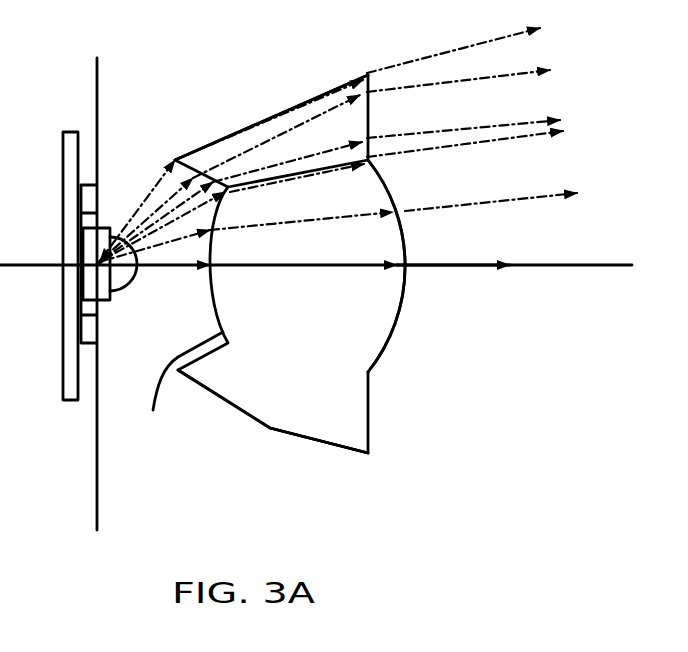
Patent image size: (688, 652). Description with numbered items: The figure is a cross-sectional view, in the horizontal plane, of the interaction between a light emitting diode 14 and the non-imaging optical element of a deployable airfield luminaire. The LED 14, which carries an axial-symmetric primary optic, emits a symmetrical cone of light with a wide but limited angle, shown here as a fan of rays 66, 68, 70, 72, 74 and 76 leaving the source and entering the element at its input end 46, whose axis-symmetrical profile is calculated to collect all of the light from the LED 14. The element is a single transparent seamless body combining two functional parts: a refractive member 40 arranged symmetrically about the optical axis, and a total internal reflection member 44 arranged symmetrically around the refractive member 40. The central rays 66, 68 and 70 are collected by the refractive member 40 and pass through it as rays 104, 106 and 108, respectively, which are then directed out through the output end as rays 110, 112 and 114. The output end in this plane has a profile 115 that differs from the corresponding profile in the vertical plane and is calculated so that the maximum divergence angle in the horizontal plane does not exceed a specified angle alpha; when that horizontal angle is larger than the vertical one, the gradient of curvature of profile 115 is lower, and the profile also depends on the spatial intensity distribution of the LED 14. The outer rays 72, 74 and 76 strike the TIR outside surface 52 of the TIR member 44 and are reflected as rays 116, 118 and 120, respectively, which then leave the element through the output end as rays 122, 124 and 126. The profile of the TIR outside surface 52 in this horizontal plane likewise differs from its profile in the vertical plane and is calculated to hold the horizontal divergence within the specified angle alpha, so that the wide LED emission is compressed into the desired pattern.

The light emitting diode 14 is at (85, 284).
The refractive member 40 is at (327, 353).
The total internal reflection member 44 is at (330, 417).
The input end 46 is at (183, 391).
The TIR outside surface 52 is at (247, 127).
The ray 66 is at (187, 266).
The ray 68 is at (184, 241).
The ray 70 is at (205, 214).
The incident ray 72 is at (172, 201).
The incident ray 74 is at (133, 223).
The incident ray 76 is at (155, 217).
The ray 104 is at (318, 268).
The ray 106 is at (312, 226).
The ray 108 is at (300, 176).
The ray 110 is at (453, 267).
The ray 112 is at (487, 206).
The ray 114 is at (468, 144).
The output end profile 115 is at (397, 334).
The ray 116 is at (302, 122).
The ray 118 is at (335, 143).
The ray 120 is at (322, 100).
The ray 122 is at (457, 50).
The ray 124 is at (512, 73).
The ray 126 is at (520, 127).